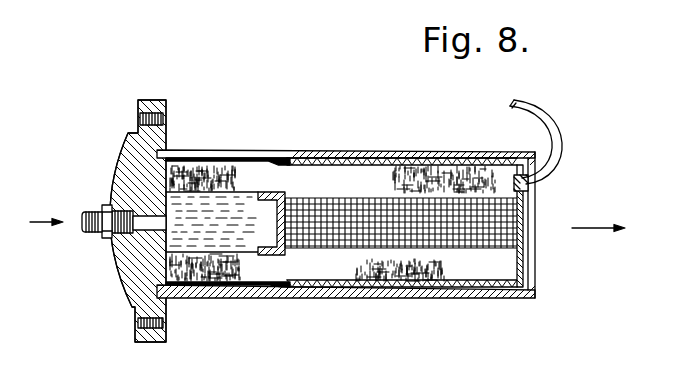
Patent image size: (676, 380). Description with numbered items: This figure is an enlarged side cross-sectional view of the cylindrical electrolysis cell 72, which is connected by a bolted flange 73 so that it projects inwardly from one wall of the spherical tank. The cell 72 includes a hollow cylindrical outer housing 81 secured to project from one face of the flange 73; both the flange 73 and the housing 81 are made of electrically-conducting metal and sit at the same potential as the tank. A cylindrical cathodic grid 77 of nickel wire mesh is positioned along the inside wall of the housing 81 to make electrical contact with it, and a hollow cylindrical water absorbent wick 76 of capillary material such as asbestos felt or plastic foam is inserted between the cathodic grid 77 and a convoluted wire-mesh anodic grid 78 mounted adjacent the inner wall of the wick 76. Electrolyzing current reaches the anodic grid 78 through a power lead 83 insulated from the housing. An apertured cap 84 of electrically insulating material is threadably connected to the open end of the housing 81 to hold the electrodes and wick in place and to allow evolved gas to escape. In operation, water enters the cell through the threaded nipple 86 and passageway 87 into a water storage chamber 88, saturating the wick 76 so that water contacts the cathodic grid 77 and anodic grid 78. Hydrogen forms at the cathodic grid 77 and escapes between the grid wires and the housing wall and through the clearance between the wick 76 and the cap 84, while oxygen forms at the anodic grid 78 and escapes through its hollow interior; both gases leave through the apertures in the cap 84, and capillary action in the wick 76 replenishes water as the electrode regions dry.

The electrolysis cell 72 is at (297, 143).
The bolted flange 73 is at (170, 133).
The water absorbent wick 76 is at (308, 270).
The cathodic grid 77 is at (388, 157).
The anodic grid 78 is at (520, 225).
The cylindrical outer housing 81 is at (230, 152).
The power lead 83 is at (555, 140).
The apertured cap 84 is at (530, 278).
The threaded nipple 86 is at (87, 232).
The passageway 87 is at (150, 228).
The water storage chamber 88 is at (240, 235).